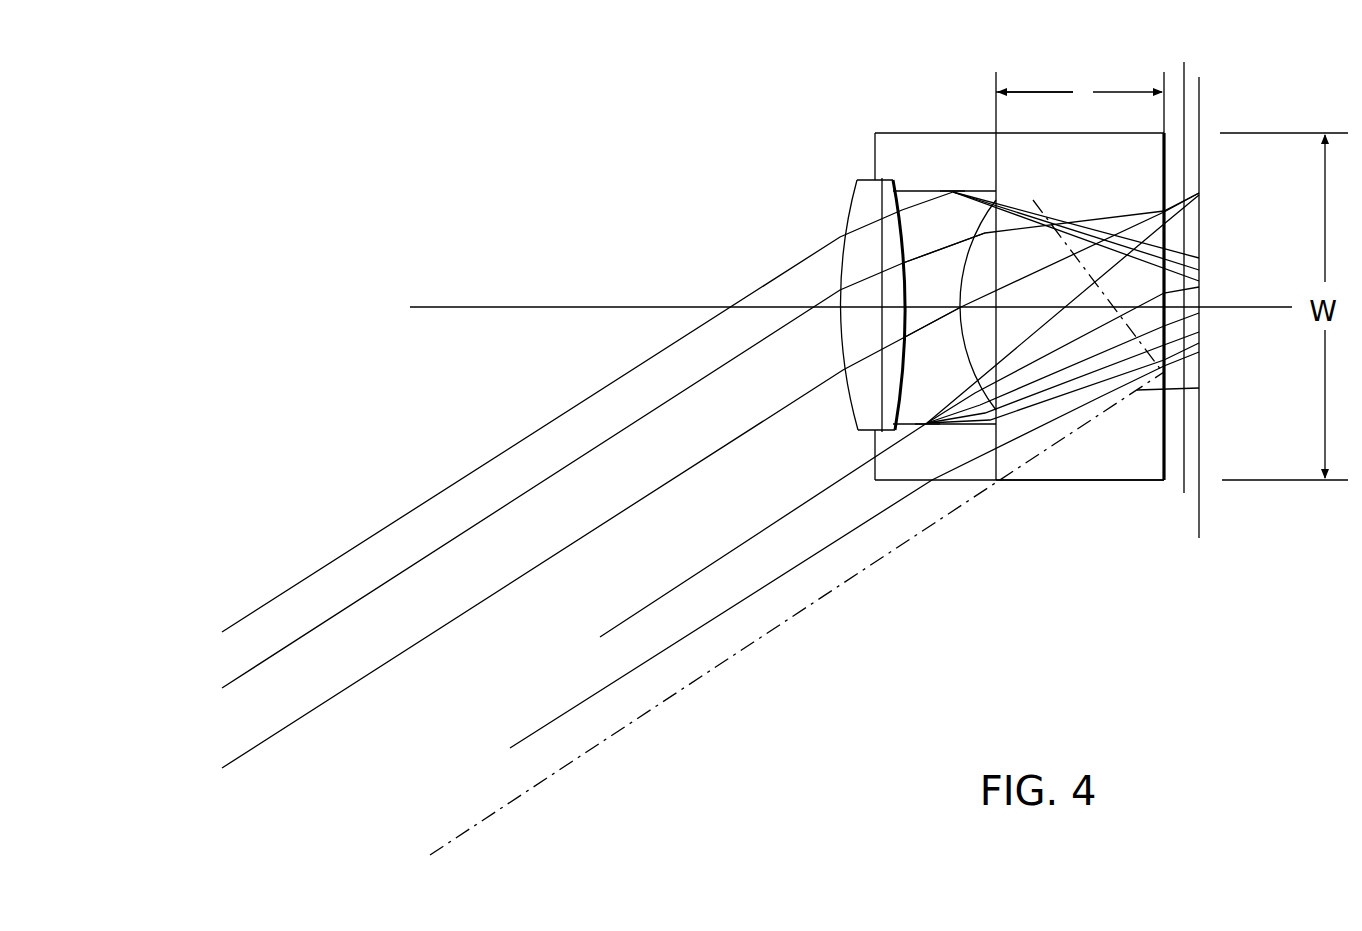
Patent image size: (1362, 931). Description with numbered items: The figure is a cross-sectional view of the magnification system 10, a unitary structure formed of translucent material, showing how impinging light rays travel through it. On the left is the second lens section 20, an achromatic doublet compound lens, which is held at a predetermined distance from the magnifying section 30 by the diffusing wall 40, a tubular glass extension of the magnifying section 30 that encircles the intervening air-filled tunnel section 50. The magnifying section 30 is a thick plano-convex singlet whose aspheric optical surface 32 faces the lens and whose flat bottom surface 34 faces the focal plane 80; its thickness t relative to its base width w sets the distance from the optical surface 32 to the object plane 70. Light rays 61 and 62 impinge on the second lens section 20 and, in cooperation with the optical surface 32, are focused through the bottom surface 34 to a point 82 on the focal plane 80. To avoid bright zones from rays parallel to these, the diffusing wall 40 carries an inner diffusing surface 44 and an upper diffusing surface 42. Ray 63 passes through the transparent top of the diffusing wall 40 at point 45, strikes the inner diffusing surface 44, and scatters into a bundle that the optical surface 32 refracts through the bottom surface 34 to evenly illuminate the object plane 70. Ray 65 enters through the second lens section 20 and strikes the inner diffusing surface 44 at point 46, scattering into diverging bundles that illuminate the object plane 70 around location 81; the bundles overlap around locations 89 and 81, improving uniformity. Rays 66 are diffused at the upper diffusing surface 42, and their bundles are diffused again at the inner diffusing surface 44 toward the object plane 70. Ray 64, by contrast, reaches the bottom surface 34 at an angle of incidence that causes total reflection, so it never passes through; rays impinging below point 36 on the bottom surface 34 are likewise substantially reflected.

The magnification system 10 is at (1101, 70).
The second lens section 20 is at (855, 208).
The magnifying section 30 is at (1069, 179).
The aspheric surface 32 is at (970, 266).
The bottom surface 34 is at (1159, 150).
The point 36 is at (990, 483).
The diffusing wall 40 is at (918, 142).
The upper diffusing surface 42 is at (975, 130).
The inner diffusing surface 44 is at (908, 187).
The point 45 is at (884, 446).
The point 46 is at (958, 178).
The tunnel section 50 is at (917, 364).
The light ray 61 is at (710, 440).
The light ray 62 is at (710, 480).
The light ray 63 is at (763, 530).
The light ray 64 is at (797, 527).
The light ray 65 is at (587, 412).
The light rays 66 is at (854, 550).
The object plane 70 is at (1181, 294).
The focal plane 80 is at (1201, 324).
The location 81 is at (1094, 239).
The point 82 is at (1082, 300).
The location 89 is at (1082, 355).